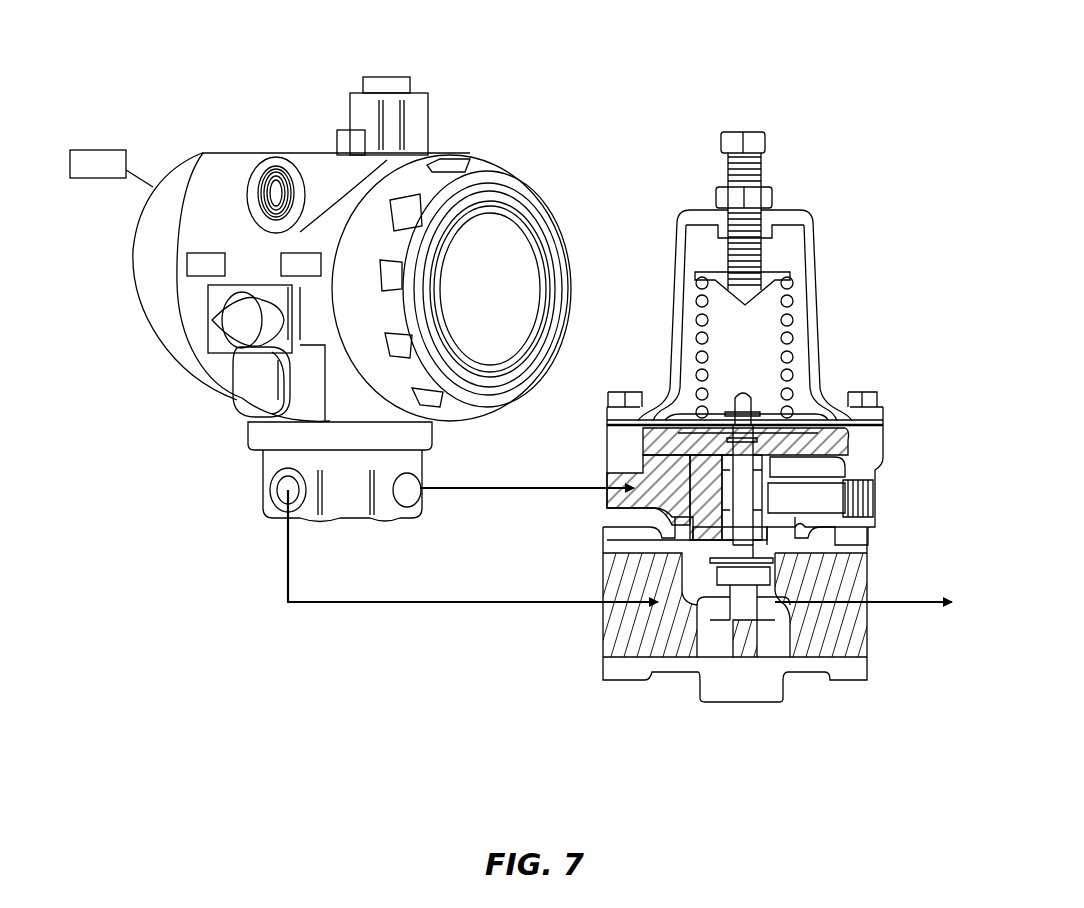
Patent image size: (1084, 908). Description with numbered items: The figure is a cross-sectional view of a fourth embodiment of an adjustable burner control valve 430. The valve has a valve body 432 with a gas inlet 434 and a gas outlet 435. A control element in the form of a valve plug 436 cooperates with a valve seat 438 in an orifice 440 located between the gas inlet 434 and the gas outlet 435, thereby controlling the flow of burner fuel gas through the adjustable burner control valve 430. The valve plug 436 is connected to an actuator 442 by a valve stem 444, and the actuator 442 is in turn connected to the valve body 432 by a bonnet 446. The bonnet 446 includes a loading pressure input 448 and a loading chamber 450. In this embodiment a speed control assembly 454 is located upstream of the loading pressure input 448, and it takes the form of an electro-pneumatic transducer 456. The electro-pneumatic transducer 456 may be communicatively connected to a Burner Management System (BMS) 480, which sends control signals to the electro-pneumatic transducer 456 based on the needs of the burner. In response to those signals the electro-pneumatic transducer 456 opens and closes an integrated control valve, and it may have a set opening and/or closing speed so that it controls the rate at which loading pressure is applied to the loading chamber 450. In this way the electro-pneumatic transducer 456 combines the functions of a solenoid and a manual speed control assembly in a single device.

The adjustable burner control valve 430 is at (856, 66).
The valve body 432 is at (650, 675).
The gas inlet 434 is at (605, 640).
The gas outlet 435 is at (845, 655).
The valve plug 436 is at (770, 580).
The valve seat 438 is at (770, 605).
The orifice 440 is at (745, 610).
The actuator 442 is at (808, 215).
The valve stem 444 is at (745, 475).
The bonnet 446 is at (865, 470).
The loading pressure input 448 is at (627, 480).
The loading chamber 450 is at (828, 437).
The speed control assembly 454 is at (175, 108).
The electro-pneumatic transducer 456 is at (472, 156).
The Burner Management System (BMS) 480 is at (101, 150).